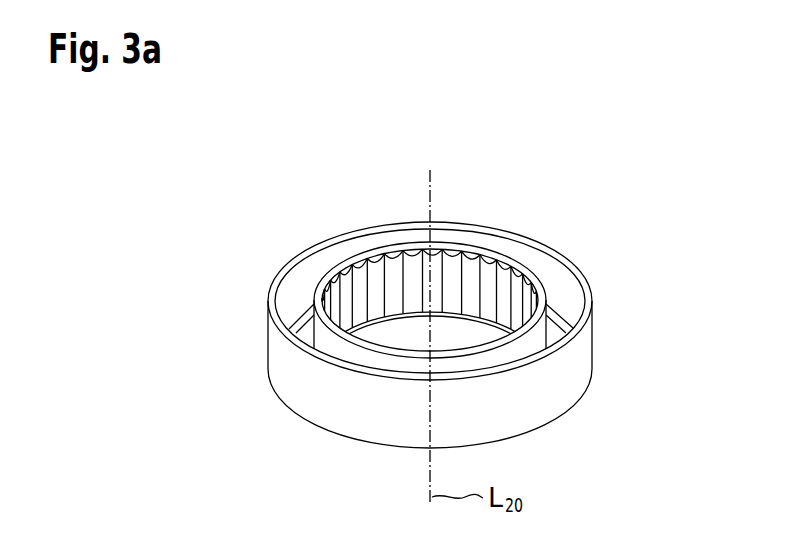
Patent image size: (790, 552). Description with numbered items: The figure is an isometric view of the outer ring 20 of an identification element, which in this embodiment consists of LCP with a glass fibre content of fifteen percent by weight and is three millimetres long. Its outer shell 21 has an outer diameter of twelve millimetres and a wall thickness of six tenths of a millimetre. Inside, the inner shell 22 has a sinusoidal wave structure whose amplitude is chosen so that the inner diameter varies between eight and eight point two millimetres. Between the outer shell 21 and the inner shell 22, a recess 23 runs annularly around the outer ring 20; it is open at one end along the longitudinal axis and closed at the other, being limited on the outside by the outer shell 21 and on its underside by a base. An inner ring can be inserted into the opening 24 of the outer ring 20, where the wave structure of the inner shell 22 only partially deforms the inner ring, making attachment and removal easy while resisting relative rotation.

The outer ring 20 is at (648, 230).
The outer shell 21 is at (270, 352).
The inner shell 22 is at (477, 257).
The recess 23 is at (310, 275).
The opening 24 is at (388, 335).